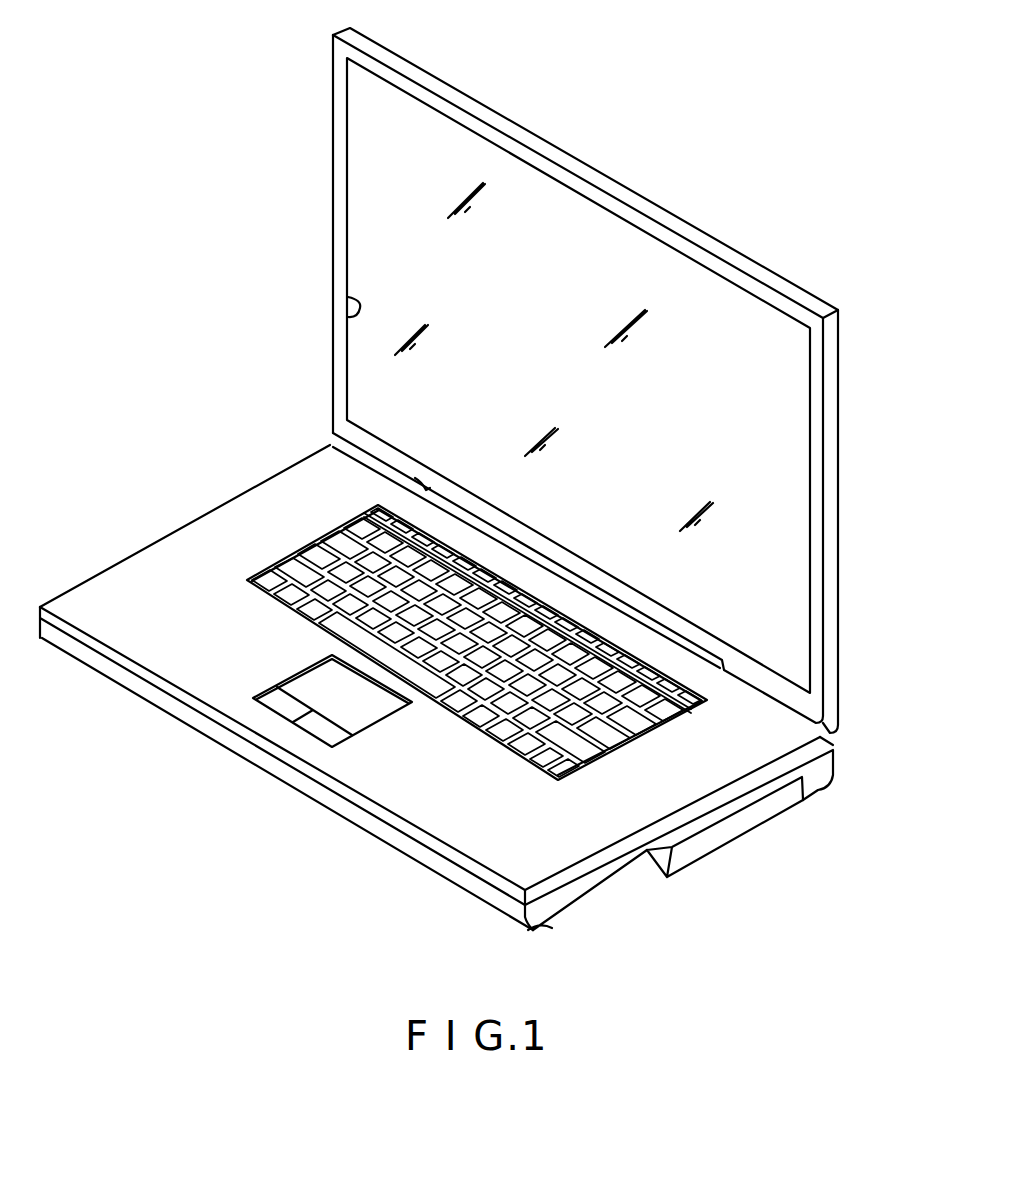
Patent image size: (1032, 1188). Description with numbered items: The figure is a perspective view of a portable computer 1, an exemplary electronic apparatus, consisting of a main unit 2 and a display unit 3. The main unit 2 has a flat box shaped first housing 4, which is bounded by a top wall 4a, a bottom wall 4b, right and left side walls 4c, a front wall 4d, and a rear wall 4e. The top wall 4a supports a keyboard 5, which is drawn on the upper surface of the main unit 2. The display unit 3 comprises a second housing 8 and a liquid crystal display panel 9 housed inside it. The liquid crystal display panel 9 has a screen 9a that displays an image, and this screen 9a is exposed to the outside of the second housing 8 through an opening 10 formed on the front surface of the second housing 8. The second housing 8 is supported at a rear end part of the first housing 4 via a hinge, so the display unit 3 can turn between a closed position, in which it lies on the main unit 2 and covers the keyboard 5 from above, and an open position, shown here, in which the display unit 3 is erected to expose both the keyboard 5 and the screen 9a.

The portable computer 1 is at (712, 167).
The main unit 2 is at (120, 690).
The display unit 3 is at (328, 250).
The first housing 4 is at (337, 788).
The top wall 4a is at (223, 517).
The bottom wall 4b is at (548, 928).
The side wall 4c is at (615, 880).
The front wall 4d is at (228, 735).
The rear wall 4e is at (837, 743).
The keyboard 5 is at (590, 727).
The second housing 8 is at (830, 462).
The liquid crystal display panel 9 is at (782, 387).
The screen 9a is at (557, 366).
The opening 10 is at (350, 318).